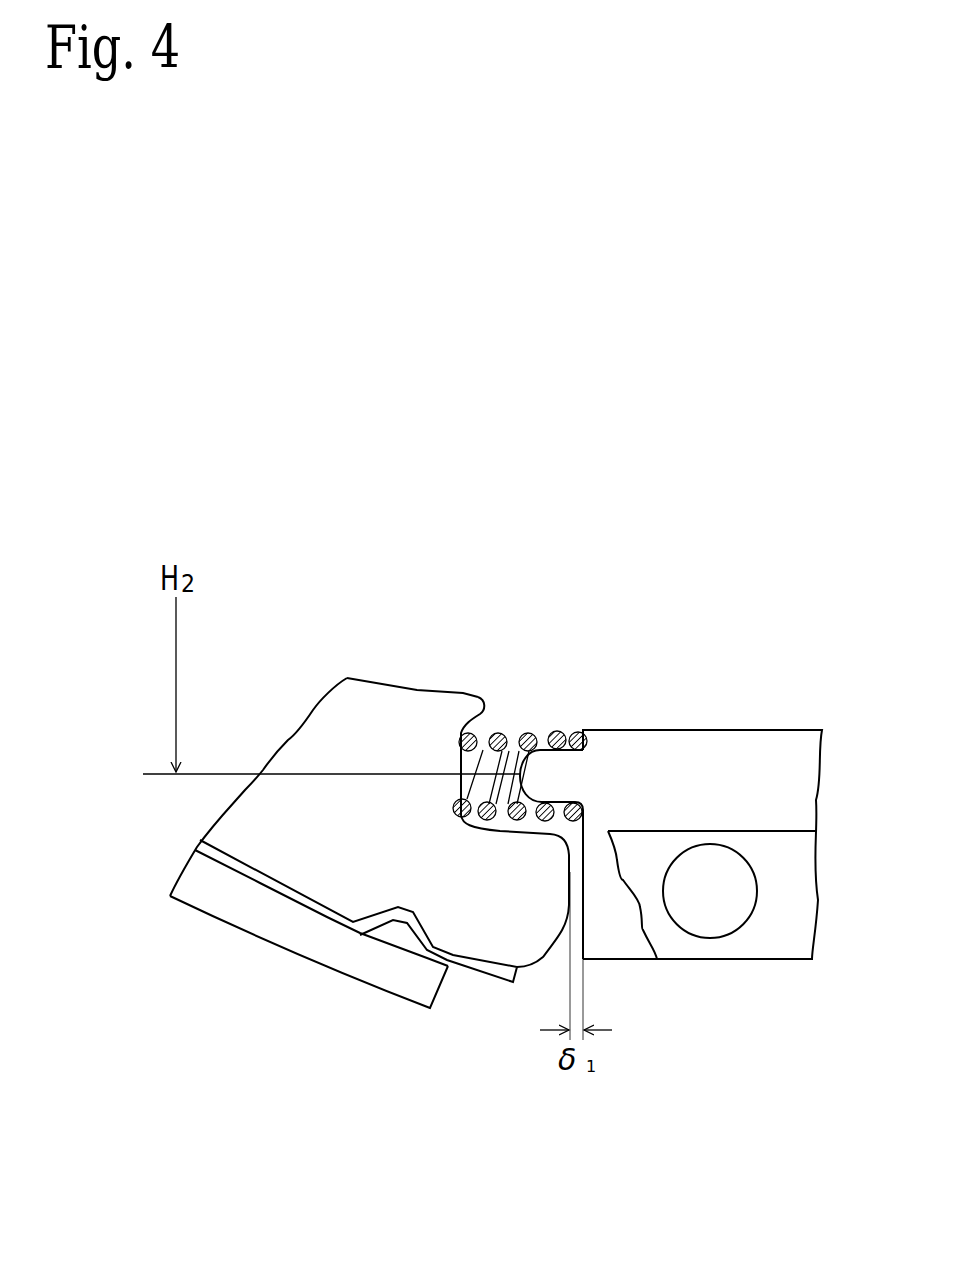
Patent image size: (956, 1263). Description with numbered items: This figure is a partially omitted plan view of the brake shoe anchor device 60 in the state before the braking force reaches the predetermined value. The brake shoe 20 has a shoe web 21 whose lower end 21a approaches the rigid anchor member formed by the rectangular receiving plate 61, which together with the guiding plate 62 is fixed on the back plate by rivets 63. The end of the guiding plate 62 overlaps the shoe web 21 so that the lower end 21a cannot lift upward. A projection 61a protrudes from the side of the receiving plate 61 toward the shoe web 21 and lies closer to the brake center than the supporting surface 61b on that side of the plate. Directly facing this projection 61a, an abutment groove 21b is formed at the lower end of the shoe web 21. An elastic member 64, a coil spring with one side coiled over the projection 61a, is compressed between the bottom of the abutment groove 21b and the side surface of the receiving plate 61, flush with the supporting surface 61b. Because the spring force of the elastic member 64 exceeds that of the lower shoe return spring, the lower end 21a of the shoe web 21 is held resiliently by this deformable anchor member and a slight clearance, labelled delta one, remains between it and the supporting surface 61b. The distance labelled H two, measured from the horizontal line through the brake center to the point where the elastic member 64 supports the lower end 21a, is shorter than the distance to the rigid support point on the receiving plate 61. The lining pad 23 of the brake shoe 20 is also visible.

The brake shoe 20 is at (345, 674).
The shoe web 21 is at (418, 694).
The lower end of shoe web 21a is at (498, 940).
The abutment groove 21b is at (472, 776).
The pad 23 is at (280, 940).
The elastic member 64 is at (528, 736).
The anchor device 60 is at (794, 728).
The rectangular receiving plate 61 is at (720, 740).
The projection 61a is at (558, 730).
The supporting surface 61b is at (570, 870).
The guiding plate 62 is at (677, 952).
The rivet 63 is at (735, 917).